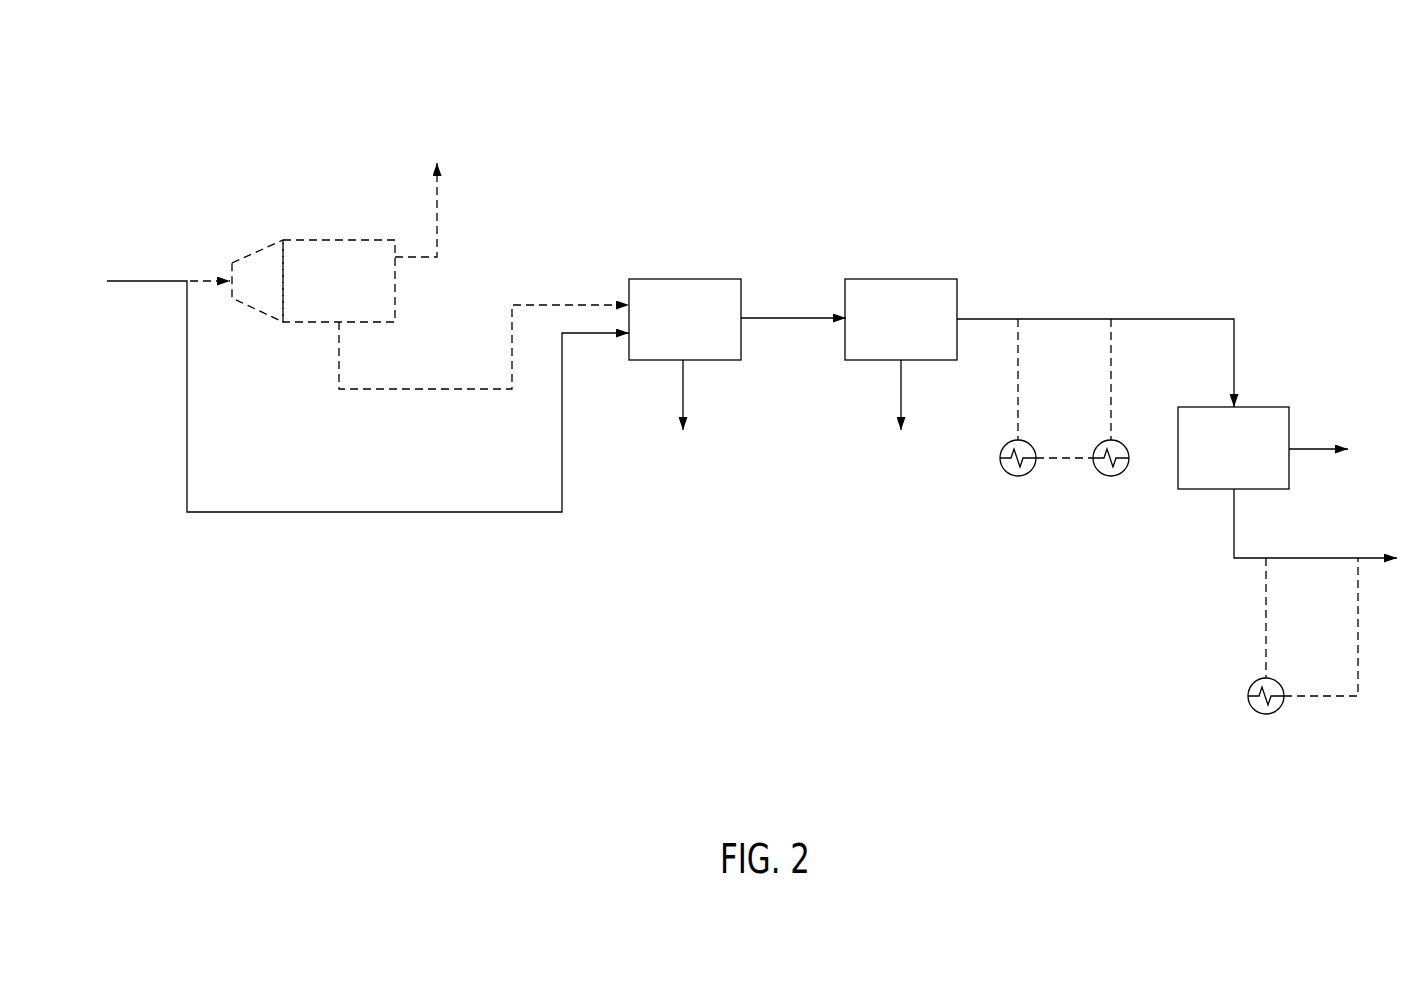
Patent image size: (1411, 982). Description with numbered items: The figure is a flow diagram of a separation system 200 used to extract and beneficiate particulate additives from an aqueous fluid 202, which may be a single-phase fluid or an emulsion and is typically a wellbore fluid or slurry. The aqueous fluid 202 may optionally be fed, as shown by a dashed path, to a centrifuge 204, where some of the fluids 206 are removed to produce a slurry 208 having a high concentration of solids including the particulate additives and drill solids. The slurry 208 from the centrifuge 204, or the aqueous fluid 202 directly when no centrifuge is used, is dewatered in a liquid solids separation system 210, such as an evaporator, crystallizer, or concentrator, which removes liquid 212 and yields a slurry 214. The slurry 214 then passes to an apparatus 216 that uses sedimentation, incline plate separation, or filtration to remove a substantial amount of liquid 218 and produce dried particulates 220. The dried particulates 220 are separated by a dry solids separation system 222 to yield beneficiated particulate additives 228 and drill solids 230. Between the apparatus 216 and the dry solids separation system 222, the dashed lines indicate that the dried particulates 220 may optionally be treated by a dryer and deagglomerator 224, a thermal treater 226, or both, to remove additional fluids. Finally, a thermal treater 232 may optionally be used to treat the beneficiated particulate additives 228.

The separation system 200 is at (297, 88).
The aqueous fluid 202 is at (133, 283).
The centrifuge 204 is at (357, 294).
The fluids 206 is at (437, 195).
The slurry 208 is at (362, 389).
The liquid solids separation system 210 is at (703, 333).
The liquid 212 is at (683, 393).
The slurry 214 is at (803, 318).
The apparatus 216 is at (920, 333).
The liquid 218 is at (901, 393).
The dried particulates 220 is at (1043, 319).
The dry solids separation system 222 is at (1252, 461).
The dryer and deagglomerator 224 is at (1002, 474).
The thermal treater 226 is at (1094, 474).
The beneficiated particulate additives 228 is at (1350, 558).
The drill solids 230 is at (1323, 449).
The thermal treater 232 is at (1252, 711).